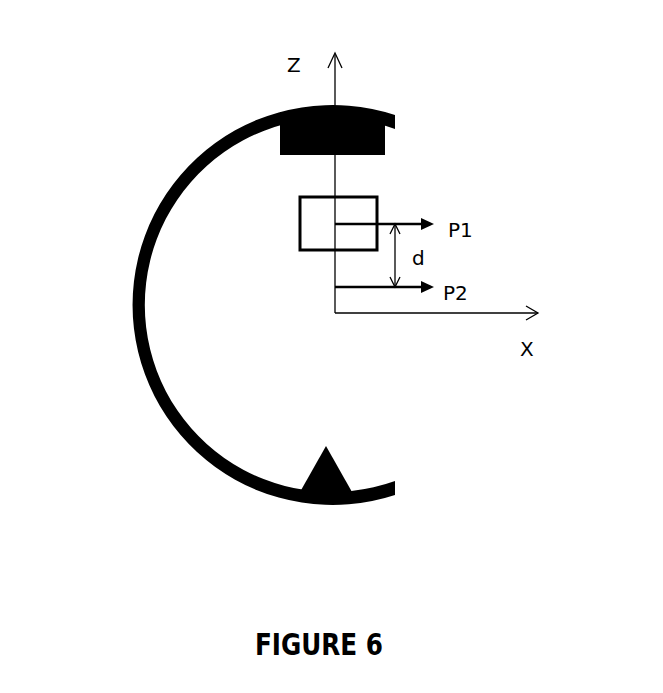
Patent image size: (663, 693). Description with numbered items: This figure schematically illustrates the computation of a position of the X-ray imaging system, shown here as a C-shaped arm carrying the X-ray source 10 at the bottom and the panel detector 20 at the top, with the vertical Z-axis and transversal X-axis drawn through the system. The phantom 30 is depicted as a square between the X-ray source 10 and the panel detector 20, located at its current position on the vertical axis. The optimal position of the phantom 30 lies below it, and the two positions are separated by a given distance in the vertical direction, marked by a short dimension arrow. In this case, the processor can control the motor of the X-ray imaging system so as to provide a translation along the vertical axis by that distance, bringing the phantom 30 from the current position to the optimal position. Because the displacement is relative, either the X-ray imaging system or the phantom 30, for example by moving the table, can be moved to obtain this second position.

The X-ray source 10 is at (343, 473).
The panel detector 20 is at (385, 146).
The phantom 30 is at (377, 205).